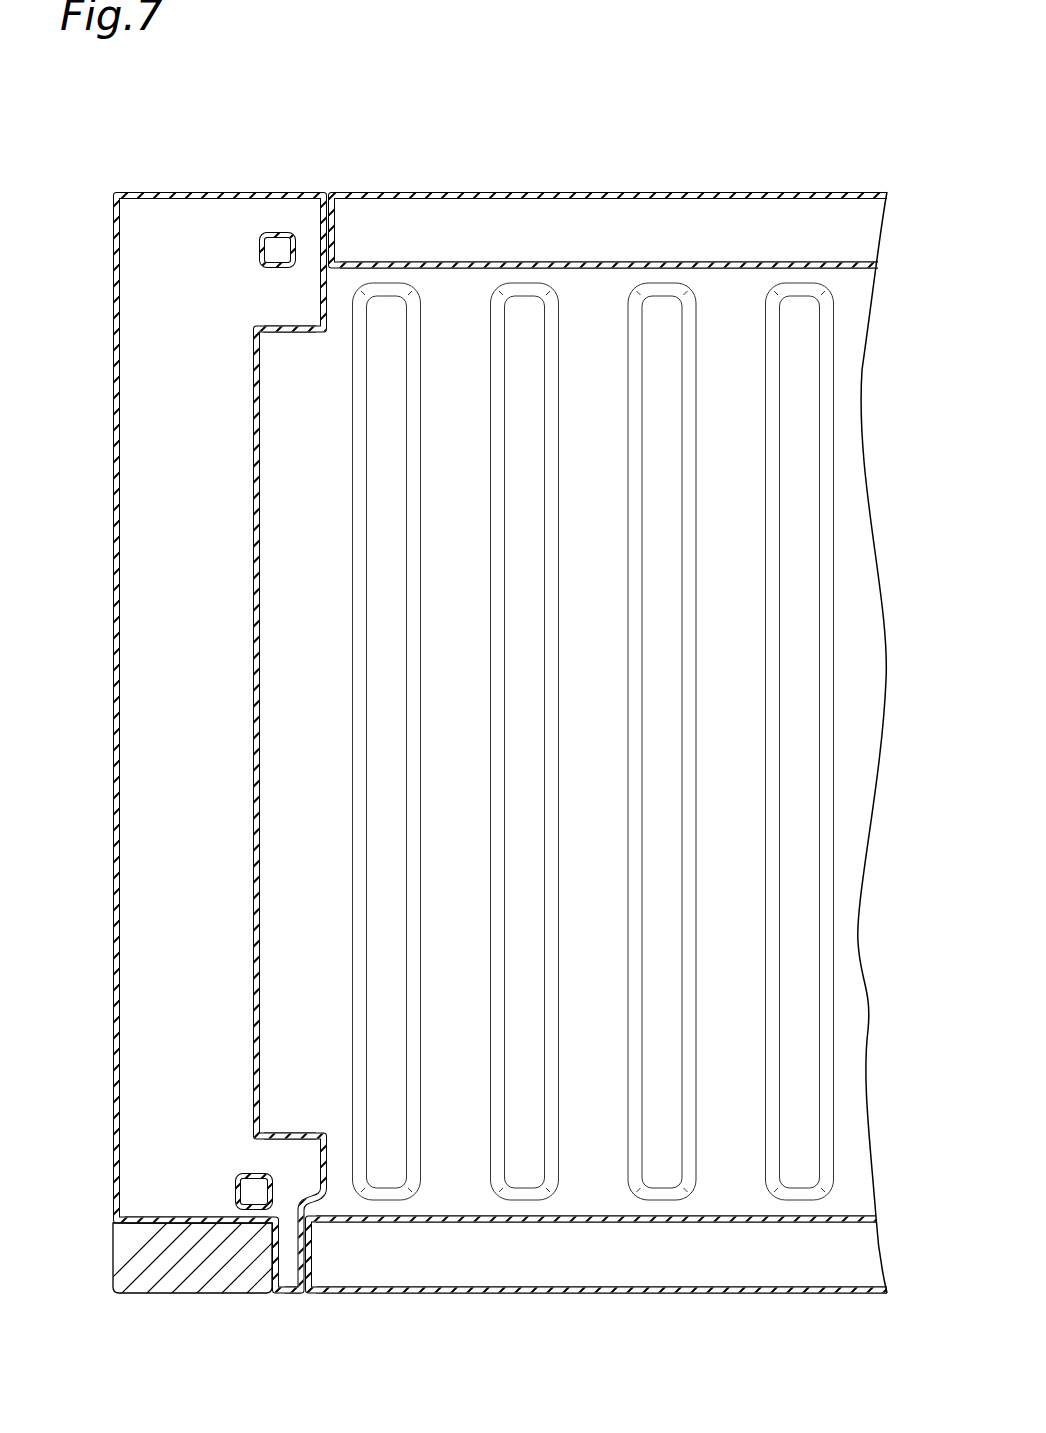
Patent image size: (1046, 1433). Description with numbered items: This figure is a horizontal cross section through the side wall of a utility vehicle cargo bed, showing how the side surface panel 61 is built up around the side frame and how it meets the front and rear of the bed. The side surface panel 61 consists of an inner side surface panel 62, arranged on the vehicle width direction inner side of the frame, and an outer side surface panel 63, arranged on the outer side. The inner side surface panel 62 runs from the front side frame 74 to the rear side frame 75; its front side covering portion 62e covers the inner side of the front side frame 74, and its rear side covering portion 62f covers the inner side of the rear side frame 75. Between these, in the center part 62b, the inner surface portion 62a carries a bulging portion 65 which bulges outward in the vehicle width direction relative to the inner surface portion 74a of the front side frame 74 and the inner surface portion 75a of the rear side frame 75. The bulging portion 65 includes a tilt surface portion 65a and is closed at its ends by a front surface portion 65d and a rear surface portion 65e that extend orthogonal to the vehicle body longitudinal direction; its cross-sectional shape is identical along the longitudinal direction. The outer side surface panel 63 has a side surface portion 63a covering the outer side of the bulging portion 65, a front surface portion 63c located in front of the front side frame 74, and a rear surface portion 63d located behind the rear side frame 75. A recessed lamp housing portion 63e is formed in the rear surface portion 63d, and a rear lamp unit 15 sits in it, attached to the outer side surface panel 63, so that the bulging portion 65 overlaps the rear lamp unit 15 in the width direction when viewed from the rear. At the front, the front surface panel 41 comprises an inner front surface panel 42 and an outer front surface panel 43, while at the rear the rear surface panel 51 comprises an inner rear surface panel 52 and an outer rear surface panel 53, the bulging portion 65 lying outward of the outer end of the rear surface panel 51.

The rear lamp unit 15 is at (234, 1293).
The front surface panel 41 is at (610, 240).
The inner front surface panel 42 is at (597, 270).
The outer front surface panel 43 is at (595, 192).
The rear surface panel 51 is at (598, 1261).
The inner rear surface panel 52 is at (590, 1216).
The outer rear surface panel 53 is at (595, 1293).
The side surface panel 61 is at (462, 749).
The inner side surface panel 62 is at (365, 743).
The inner surface portion 62a is at (260, 524).
The center part 62b is at (260, 481).
The front side covering portion 62e is at (327, 297).
The rear side covering portion 62f is at (327, 1168).
The outer side surface panel 63 is at (192, 742).
The side surface portion 63a is at (112, 505).
The front surface portion 63c is at (175, 192).
The rear surface portion 63d is at (133, 1223).
The lamp housing portion 63e is at (180, 1223).
The bulging portion 65 is at (260, 653).
The tilt surface portion 65a is at (260, 622).
The front surface portion 65d is at (297, 333).
The rear surface portion 65e is at (309, 1133).
The front side frame 74 is at (261, 206).
The inner surface portion 74a is at (296, 240).
The rear side frame 75 is at (244, 1149).
The inner surface portion 75a is at (274, 1188).